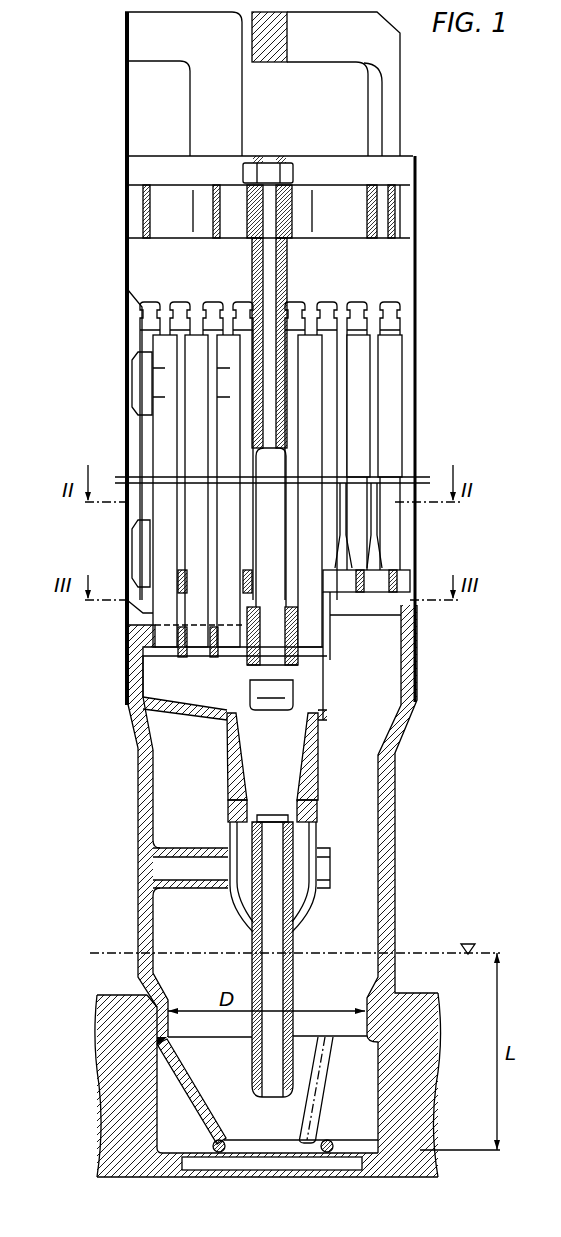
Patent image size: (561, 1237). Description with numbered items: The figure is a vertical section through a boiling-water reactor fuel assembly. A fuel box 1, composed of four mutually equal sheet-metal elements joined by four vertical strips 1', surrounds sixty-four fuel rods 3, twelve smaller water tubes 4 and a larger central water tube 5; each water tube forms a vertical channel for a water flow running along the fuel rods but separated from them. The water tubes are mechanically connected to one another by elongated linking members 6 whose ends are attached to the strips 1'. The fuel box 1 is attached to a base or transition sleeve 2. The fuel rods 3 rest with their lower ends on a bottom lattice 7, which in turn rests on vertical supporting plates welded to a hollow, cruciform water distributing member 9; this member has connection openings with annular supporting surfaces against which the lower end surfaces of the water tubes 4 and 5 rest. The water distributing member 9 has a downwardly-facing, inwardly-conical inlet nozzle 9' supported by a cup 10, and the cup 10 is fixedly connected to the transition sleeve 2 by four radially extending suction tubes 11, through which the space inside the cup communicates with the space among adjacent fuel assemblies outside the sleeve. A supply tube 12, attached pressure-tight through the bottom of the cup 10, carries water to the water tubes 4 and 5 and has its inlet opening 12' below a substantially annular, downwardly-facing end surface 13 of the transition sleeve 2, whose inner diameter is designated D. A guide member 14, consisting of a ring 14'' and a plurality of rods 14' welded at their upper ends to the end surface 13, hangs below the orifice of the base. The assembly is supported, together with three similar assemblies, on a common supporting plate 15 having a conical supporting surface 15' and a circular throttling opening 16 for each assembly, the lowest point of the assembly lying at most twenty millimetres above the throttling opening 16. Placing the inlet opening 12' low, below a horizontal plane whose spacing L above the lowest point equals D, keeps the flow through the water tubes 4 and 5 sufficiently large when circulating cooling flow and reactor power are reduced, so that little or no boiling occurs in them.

The fuel box 1 is at (287, 357).
The vertical strips 1' is at (106, 358).
The transition sleeve 2 is at (425, 789).
The fuel rods 3 is at (393, 555).
The water tubes 4 is at (177, 441).
The central water tube 5 is at (327, 528).
The linking members 6 is at (140, 548).
The bottom lattice 7 is at (375, 585).
The water distributing member 9 is at (235, 682).
The inlet nozzle 9' is at (250, 756).
The cup 10 is at (303, 917).
The suction tubes 11 is at (177, 868).
The supply tube 12 is at (297, 956).
The inlet opening 12' is at (321, 1090).
The annular end surface 13 is at (378, 1045).
The guide member 14 is at (209, 1088).
The rods 14' is at (195, 1091).
The ring 14'' is at (293, 1134).
The supporting plate 15 is at (239, 1086).
The conical supporting surface 15' is at (97, 1014).
The throttling opening 16 is at (280, 1157).